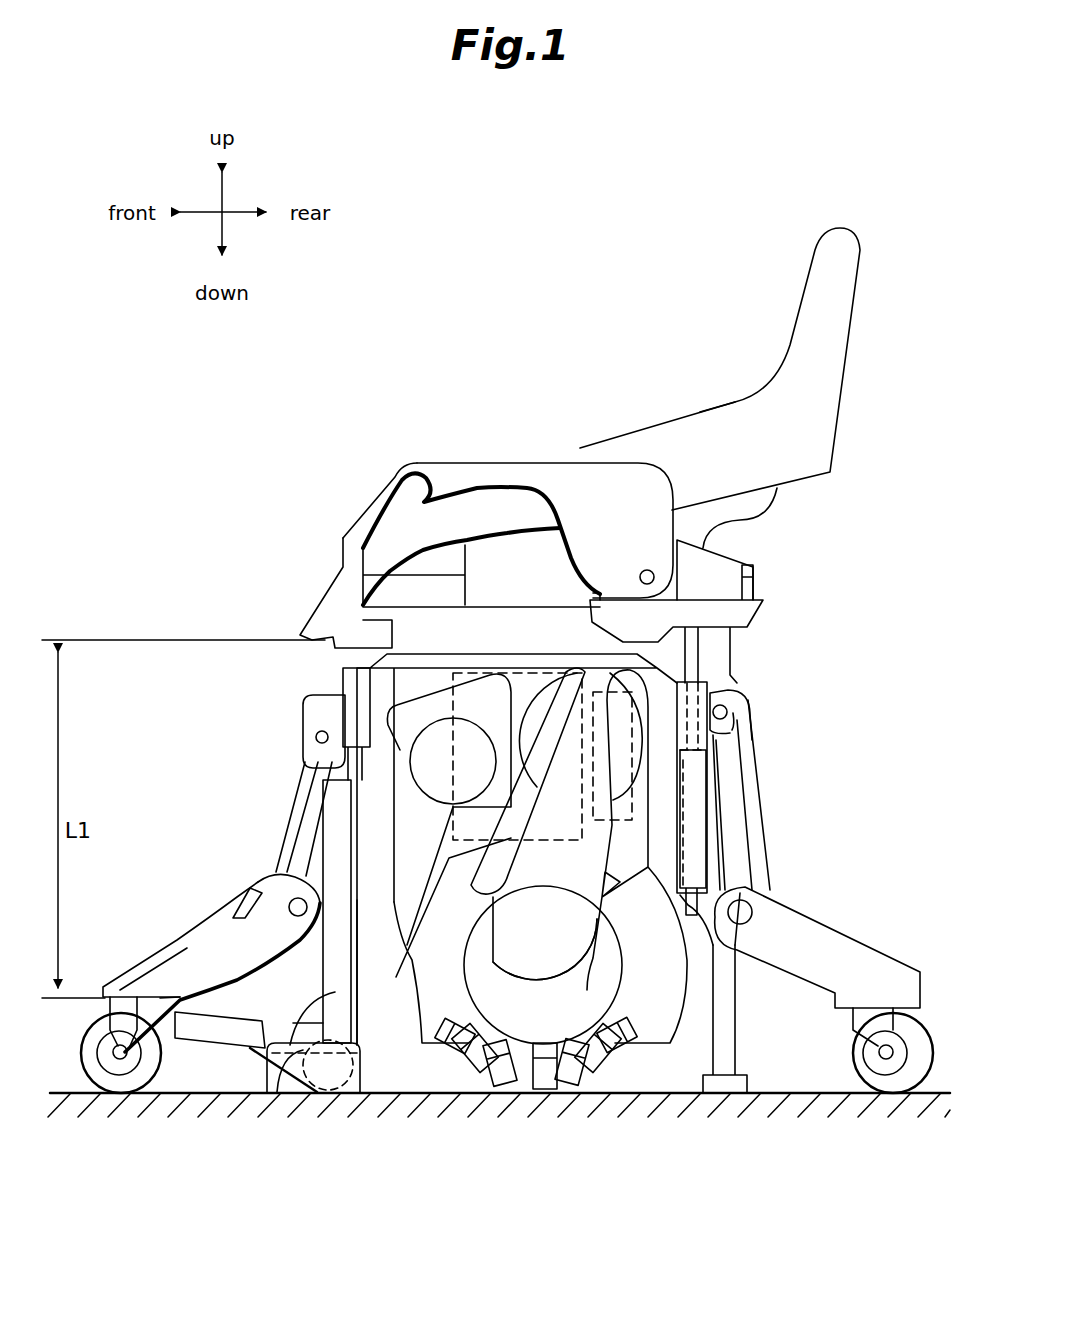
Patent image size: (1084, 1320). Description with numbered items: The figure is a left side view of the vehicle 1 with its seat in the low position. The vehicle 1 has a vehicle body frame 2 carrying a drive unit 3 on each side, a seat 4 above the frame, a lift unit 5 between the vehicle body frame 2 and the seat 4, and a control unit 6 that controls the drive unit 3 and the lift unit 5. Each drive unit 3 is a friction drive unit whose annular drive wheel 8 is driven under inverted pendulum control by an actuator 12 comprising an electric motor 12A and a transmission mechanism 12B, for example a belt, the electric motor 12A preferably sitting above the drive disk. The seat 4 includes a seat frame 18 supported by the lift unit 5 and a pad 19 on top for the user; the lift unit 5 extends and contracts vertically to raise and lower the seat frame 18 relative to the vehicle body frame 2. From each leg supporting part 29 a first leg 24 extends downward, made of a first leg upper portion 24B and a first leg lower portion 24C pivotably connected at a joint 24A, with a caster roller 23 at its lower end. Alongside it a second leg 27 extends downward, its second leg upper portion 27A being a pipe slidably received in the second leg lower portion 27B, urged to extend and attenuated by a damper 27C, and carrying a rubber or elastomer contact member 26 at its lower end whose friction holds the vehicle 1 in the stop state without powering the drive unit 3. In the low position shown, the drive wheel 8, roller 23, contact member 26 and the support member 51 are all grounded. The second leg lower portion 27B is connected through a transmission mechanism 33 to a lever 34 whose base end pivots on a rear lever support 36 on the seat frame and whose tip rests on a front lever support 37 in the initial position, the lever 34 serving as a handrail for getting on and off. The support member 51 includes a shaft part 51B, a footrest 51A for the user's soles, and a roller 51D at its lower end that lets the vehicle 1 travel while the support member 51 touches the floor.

The vehicle 1 is at (425, 345).
The vehicle body frame 2 is at (623, 830).
The drive unit 3 is at (453, 1062).
The seat 4 is at (813, 253).
The lift unit 5 is at (543, 695).
The control unit 6 is at (633, 793).
The drive wheel 8 is at (580, 1092).
The actuator 12 is at (604, 965).
The electric motor 12A is at (543, 712).
The transmission mechanism 12B is at (537, 997).
The seat frame 18 is at (437, 625).
The pad 19 is at (727, 407).
The roller 23 is at (103, 1077).
The first leg 24 is at (177, 938).
The joint 24A is at (272, 872).
The first leg upper portion 24B is at (303, 803).
The first leg lower portion 24C is at (180, 958).
The contact member 26 is at (290, 1062).
The second leg 27 is at (316, 970).
The second leg upper portion 27A is at (327, 773).
The second leg lower portion 27B is at (370, 1040).
The damper 27C is at (690, 893).
The leg supporting part 29 is at (318, 673).
The transmission mechanism 33 is at (762, 578).
The lever 34 is at (611, 482).
The rear lever support 36 is at (677, 573).
The front lever support 37 is at (348, 550).
The support member 51 is at (227, 1053).
The footrest 51A is at (190, 1042).
The shaft part 51B is at (363, 905).
The roller 51D is at (290, 1085).